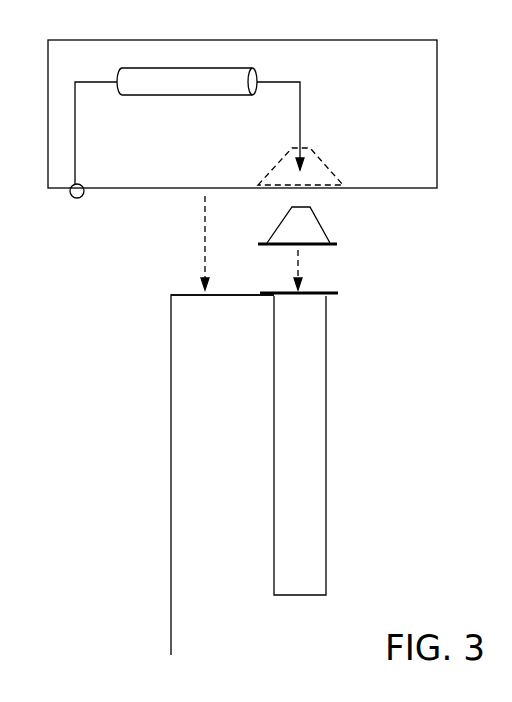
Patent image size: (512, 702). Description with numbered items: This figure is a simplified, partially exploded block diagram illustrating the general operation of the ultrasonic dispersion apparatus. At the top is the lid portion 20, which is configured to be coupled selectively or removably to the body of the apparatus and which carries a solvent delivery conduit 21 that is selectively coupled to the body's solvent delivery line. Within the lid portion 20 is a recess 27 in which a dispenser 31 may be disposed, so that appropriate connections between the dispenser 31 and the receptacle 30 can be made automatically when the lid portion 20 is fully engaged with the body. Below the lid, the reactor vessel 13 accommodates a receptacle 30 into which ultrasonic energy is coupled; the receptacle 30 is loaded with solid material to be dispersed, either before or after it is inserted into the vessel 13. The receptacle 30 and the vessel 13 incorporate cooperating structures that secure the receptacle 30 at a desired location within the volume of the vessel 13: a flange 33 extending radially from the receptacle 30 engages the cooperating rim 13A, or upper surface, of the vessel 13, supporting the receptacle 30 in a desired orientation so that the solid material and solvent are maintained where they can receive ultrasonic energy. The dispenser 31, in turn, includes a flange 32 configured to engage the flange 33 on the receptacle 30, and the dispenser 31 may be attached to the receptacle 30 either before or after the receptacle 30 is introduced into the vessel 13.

The reactor vessel 13 is at (230, 489).
The rim 13A is at (188, 294).
The lid portion 20 is at (437, 146).
The solvent delivery conduit 21 is at (302, 104).
The recess 27 is at (316, 162).
The receptacle 30 is at (273, 337).
The dispenser 31 is at (290, 222).
The flange 32 is at (338, 242).
The flange 33 is at (340, 297).